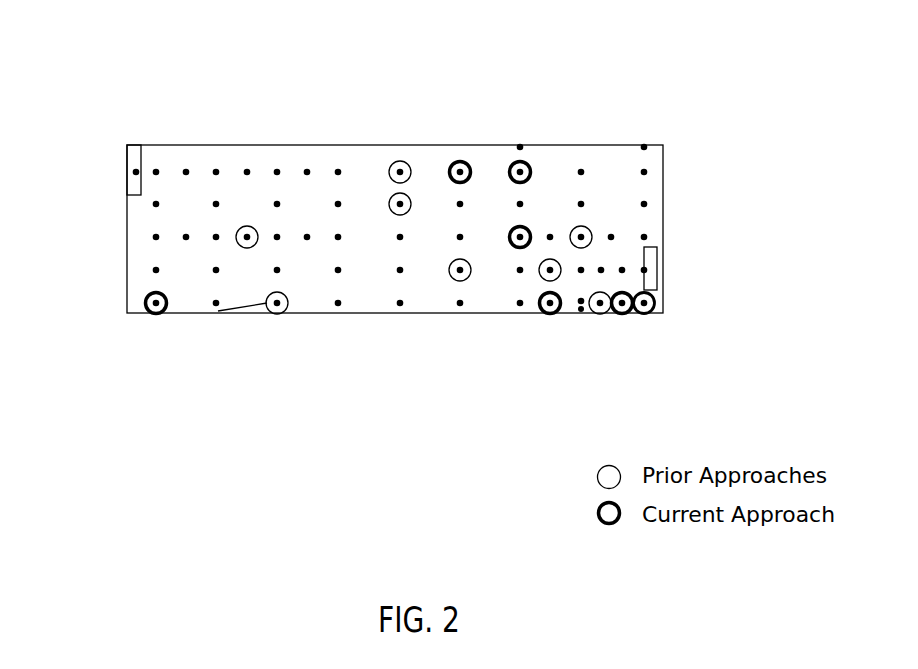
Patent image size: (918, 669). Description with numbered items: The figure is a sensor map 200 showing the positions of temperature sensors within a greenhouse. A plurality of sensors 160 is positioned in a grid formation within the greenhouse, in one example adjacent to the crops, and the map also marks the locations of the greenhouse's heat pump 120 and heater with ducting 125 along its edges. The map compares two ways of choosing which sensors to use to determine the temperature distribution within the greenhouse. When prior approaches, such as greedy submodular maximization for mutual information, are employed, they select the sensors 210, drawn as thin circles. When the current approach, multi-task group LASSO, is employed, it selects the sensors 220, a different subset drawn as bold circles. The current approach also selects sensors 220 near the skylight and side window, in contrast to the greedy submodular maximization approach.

The sensor map 200 is at (655, 52).
The heat pump 120 is at (652, 272).
The heater with ducting 125 is at (129, 145).
The sensors 160 is at (217, 168).
The sensors selected by prior approaches 210 is at (400, 161).
The sensors selected by current approach 220 is at (514, 163).